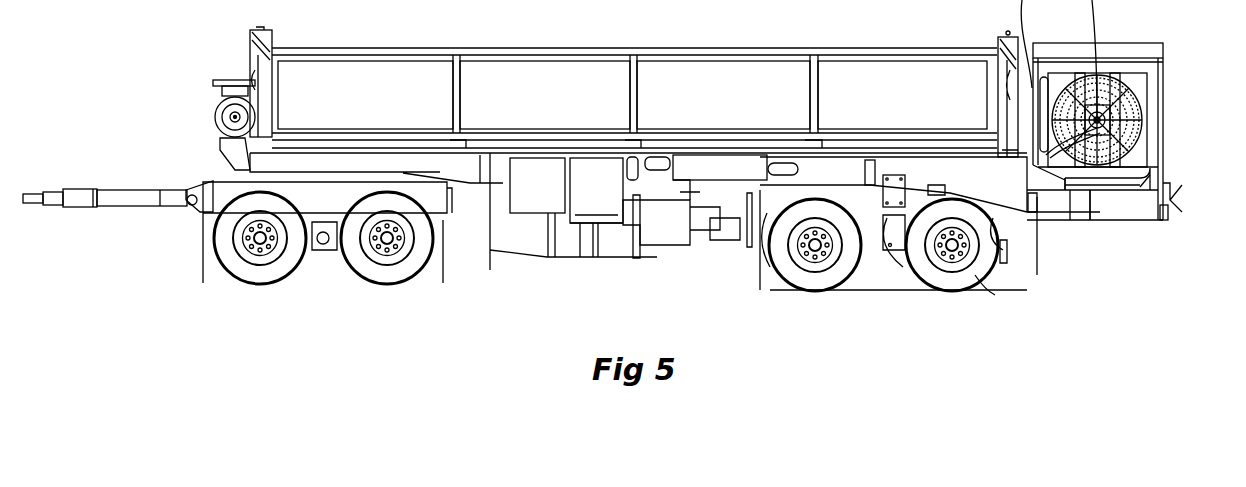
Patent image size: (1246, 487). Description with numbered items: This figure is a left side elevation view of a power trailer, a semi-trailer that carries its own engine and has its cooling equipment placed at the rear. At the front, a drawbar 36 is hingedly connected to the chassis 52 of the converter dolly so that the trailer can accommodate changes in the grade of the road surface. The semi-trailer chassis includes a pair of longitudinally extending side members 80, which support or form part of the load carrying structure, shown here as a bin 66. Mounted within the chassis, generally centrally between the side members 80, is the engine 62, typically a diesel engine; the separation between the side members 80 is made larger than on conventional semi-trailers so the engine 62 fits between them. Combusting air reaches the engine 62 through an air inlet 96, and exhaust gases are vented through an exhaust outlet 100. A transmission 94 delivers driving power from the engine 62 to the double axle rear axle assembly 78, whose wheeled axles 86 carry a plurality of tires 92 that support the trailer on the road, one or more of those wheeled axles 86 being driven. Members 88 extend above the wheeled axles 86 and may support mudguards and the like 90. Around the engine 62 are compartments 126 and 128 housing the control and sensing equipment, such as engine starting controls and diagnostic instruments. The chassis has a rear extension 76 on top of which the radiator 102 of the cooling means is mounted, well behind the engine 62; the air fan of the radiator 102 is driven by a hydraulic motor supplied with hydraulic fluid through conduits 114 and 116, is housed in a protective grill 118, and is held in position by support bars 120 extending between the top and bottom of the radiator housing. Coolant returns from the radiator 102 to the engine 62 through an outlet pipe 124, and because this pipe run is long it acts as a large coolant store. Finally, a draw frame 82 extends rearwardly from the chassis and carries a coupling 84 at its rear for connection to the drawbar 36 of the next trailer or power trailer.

The drawbar 36 is at (131, 197).
The chassis of the converter dolly 52 is at (228, 187).
The engine 62 is at (594, 205).
The bin 66 is at (857, 100).
The rear extension 76 is at (1102, 208).
The rear axle assembly 78 is at (869, 293).
The side members 80 is at (677, 193).
The draw frame 82 is at (1164, 215).
The coupling 84 is at (1177, 197).
The wheeled axles 86 is at (814, 252).
The members 88 is at (928, 185).
The mudguards 90 is at (1037, 275).
The tires 92 is at (975, 275).
The transmission 94 is at (717, 224).
The air inlet 96 is at (234, 80).
The exhaust outlet 100 is at (707, 165).
The radiator 102 is at (1170, 118).
The conduit 114 is at (1062, 92).
The conduit 116 is at (1092, 177).
The protective grill 118 is at (1142, 88).
The support bars 120 is at (1117, 90).
The outlet pipe 124 is at (1150, 208).
The compartment 126 is at (533, 193).
The compartment 128 is at (605, 210).